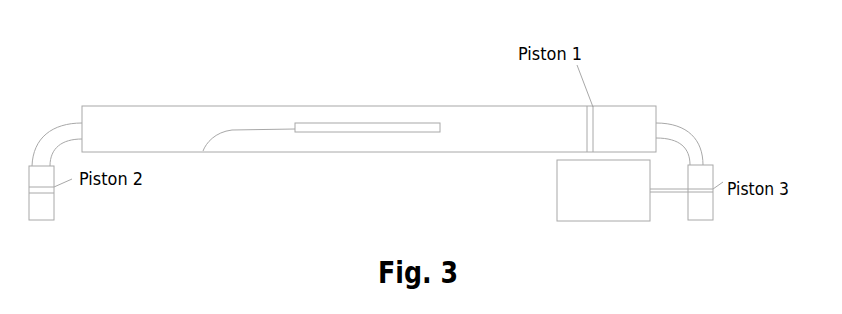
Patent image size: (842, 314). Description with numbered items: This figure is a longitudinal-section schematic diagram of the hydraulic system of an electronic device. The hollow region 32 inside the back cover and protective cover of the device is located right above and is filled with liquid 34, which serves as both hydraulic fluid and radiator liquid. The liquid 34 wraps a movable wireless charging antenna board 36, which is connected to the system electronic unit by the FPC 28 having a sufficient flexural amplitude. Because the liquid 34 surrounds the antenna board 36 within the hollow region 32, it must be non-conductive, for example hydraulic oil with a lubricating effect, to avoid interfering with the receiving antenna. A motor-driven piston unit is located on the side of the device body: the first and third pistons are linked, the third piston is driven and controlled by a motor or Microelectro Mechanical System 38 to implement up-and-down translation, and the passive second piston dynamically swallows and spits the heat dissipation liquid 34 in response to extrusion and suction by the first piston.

The FPC 28 is at (243, 133).
The hollow region 32 is at (610, 107).
The liquid 34 is at (158, 123).
The wireless charging antenna board 36 is at (385, 123).
The motor or Microelectro Mechanical System 38 is at (648, 210).